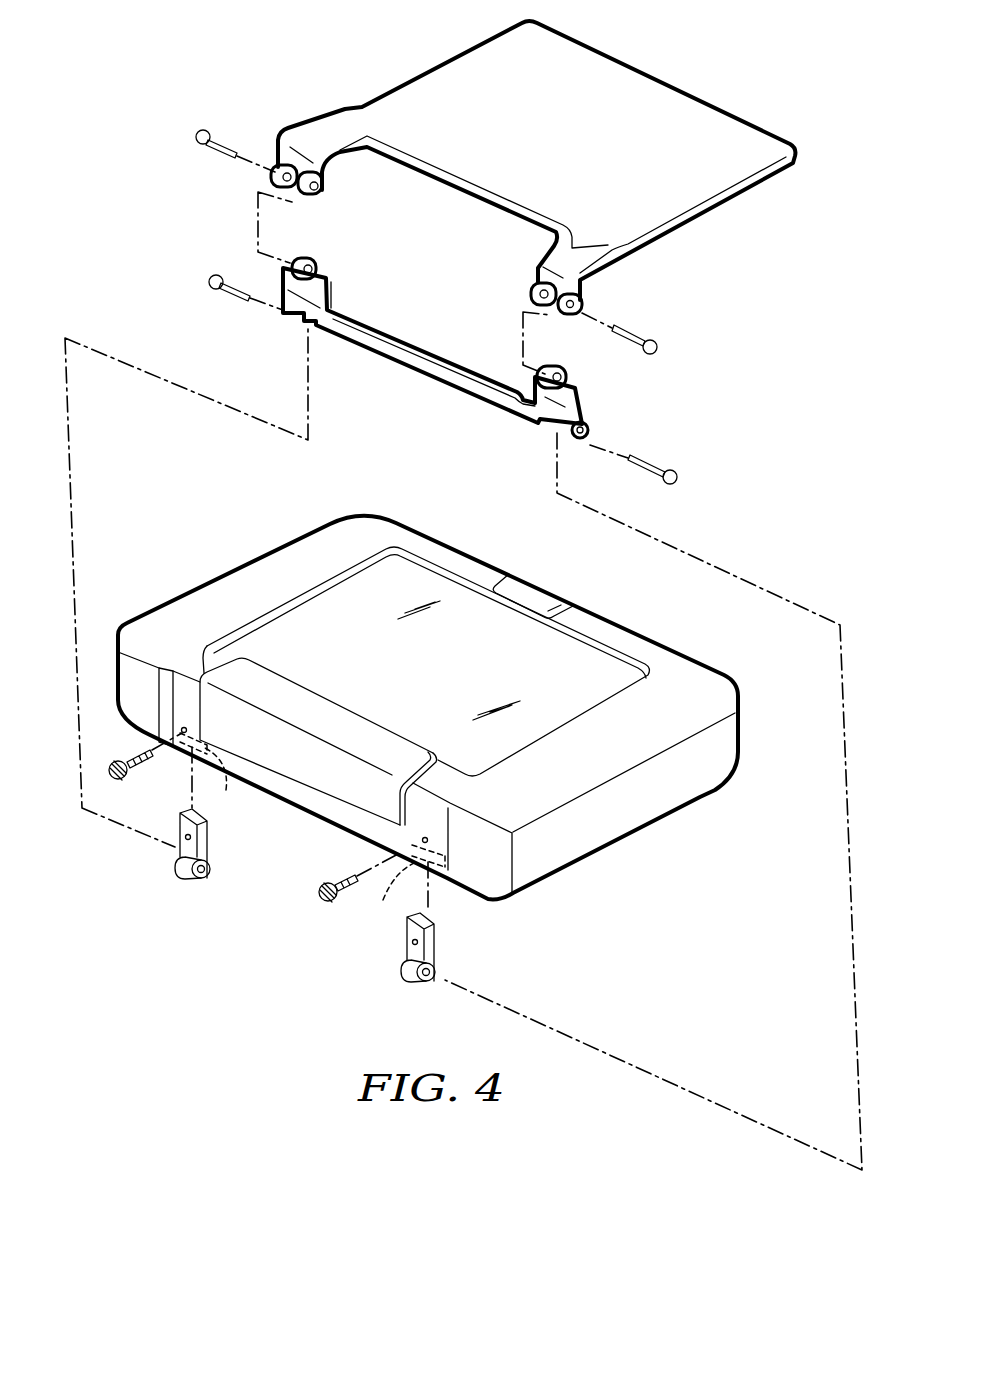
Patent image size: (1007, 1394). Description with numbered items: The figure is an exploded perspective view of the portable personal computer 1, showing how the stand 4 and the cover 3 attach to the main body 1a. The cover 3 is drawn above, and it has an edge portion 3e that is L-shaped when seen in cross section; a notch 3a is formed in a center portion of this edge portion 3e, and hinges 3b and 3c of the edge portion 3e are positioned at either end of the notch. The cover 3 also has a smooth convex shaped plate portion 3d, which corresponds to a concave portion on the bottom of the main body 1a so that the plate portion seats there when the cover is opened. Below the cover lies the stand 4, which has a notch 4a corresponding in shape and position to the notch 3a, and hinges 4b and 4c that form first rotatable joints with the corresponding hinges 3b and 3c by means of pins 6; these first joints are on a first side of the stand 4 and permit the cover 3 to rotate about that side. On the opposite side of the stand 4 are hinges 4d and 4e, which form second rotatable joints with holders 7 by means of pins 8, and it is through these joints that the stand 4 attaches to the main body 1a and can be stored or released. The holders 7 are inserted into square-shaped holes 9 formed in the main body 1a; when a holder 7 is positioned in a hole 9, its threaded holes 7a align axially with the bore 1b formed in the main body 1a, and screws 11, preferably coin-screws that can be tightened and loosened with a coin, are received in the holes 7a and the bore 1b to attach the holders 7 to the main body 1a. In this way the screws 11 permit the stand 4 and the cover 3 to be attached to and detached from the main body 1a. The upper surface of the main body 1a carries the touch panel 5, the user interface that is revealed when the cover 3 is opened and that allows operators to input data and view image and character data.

The portable computer 1 is at (620, 840).
The main body 1a is at (713, 693).
The bore 1b is at (182, 733).
The cover 3 is at (462, 59).
The notch 3a is at (458, 186).
The hinge 3b is at (582, 304).
The hinge 3c is at (274, 163).
The smooth convex shaped plate portion 3d is at (443, 160).
The edge portion 3e is at (308, 143).
The stand 4 is at (430, 377).
The notch 4a is at (452, 368).
The hinge 4b is at (566, 376).
The hinge 4c is at (303, 258).
The hinge 4d is at (540, 423).
The hinge 4e is at (297, 317).
The touch panel 5 is at (310, 610).
The pin 6 is at (213, 150).
The holder 7 is at (198, 848).
The threaded hole 7a is at (187, 840).
The pin 8 is at (222, 292).
The square-shaped hole 9 is at (310, 836).
The screw 11 is at (140, 753).